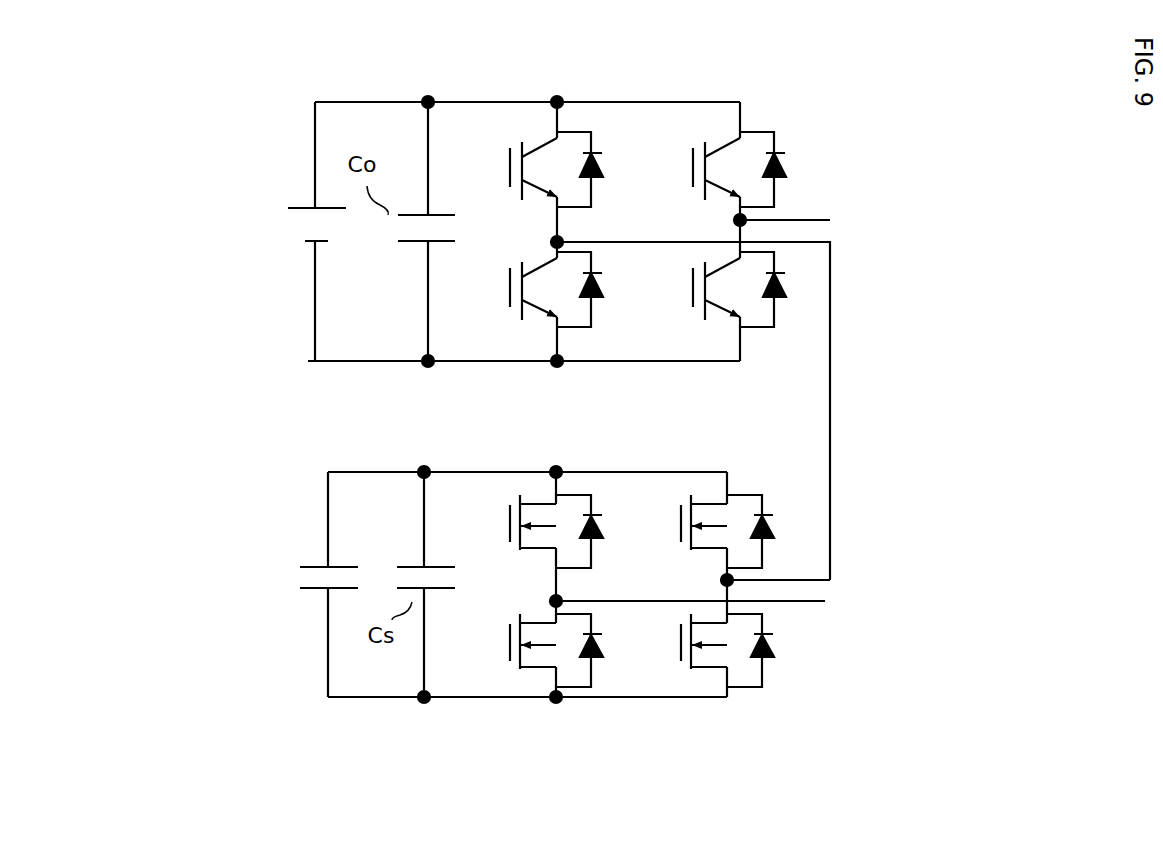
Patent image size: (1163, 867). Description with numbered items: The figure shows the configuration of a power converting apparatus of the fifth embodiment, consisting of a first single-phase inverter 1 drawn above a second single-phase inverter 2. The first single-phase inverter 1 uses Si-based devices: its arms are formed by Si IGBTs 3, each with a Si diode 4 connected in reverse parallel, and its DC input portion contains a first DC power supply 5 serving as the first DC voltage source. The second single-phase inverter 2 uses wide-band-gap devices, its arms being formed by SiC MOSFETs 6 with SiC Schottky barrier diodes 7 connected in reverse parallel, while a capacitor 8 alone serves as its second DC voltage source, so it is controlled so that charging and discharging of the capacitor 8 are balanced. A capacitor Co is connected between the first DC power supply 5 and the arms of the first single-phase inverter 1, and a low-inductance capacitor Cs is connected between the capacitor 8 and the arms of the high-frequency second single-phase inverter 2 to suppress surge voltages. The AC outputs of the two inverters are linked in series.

The first single-phase inverter 1 is at (642, 95).
The second single-phase inverter 2 is at (620, 463).
The Si IGBT 3 is at (702, 330).
The Si diode 4 is at (783, 307).
The first DC power supply 5 is at (300, 225).
The SiC MOSFET 6 is at (528, 678).
The SiC Schottky barrier diode 7 is at (598, 665).
The capacitor 8 is at (293, 582).